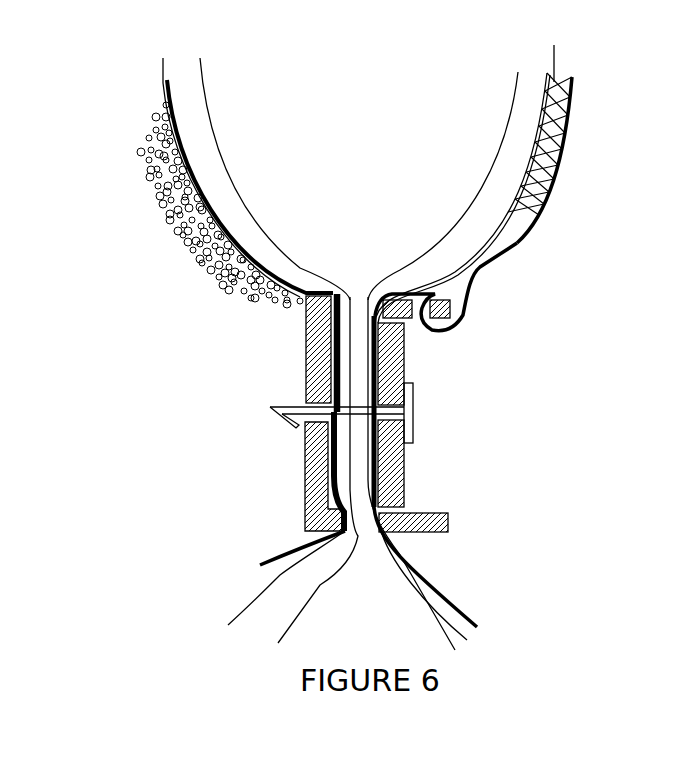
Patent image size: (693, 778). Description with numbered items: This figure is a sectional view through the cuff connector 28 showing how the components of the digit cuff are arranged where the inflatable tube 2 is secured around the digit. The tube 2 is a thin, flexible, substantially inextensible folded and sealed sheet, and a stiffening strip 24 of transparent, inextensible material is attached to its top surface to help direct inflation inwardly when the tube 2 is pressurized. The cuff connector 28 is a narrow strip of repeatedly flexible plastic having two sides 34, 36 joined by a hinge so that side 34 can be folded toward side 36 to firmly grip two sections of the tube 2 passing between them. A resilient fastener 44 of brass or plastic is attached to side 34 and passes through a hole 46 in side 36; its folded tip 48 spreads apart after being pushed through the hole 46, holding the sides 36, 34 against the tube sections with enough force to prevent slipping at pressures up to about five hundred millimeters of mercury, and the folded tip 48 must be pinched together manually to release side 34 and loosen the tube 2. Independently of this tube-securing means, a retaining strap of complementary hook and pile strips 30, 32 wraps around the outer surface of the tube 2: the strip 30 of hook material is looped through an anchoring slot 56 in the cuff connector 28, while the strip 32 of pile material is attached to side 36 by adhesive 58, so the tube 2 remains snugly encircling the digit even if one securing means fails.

The inflatable tube 2 is at (207, 105).
The stiffening strip 24 is at (163, 68).
The cuff connector 28 is at (438, 513).
The strip of hook material 30 is at (562, 163).
The strip of pile material 32 is at (147, 163).
The side 34 is at (405, 467).
The side 36 is at (308, 378).
The fastener 44 is at (414, 411).
The hole 46 is at (298, 430).
The folded tip 48 is at (268, 410).
The anchoring slot 56 is at (413, 310).
The adhesive 58 is at (327, 356).